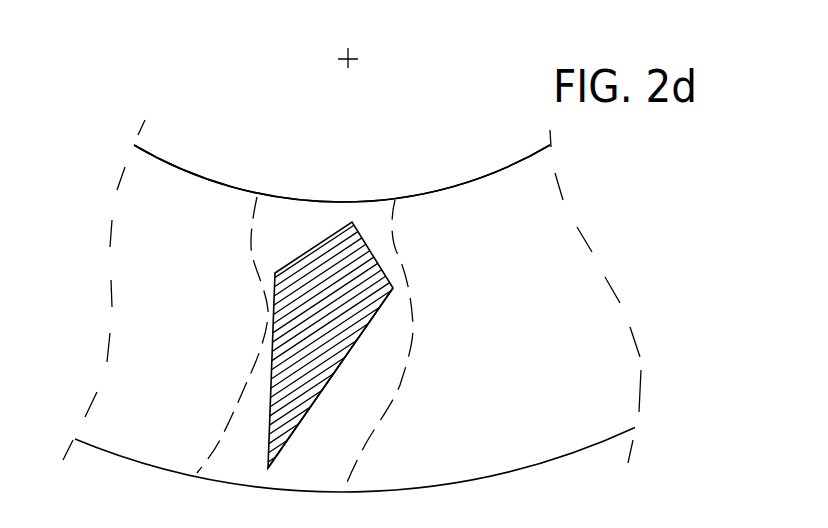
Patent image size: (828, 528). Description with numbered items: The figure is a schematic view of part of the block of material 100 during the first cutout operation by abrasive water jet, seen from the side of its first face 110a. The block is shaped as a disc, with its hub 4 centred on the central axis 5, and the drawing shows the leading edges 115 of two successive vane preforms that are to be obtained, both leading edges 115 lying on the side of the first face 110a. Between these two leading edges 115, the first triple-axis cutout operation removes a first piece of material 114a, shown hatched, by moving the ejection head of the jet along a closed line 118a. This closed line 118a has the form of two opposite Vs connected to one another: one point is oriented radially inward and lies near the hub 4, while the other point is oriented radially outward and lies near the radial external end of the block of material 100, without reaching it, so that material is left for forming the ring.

The block of material 100 is at (480, 128).
The hub 4 is at (423, 191).
The central axis 5 is at (350, 57).
The first face 110a is at (213, 173).
The first piece of material 114a is at (322, 247).
The leading edge 115 is at (252, 250).
The closed line 118a is at (363, 333).